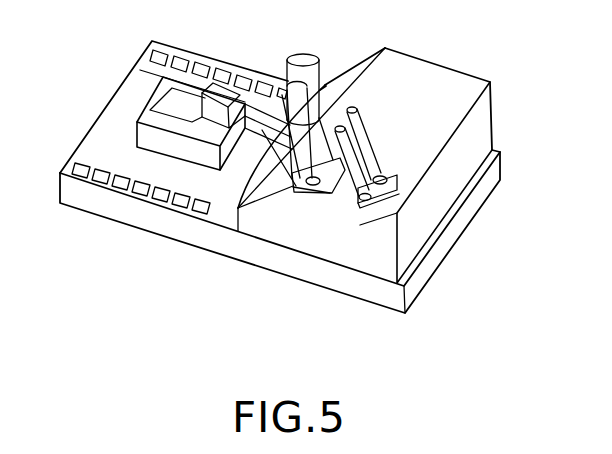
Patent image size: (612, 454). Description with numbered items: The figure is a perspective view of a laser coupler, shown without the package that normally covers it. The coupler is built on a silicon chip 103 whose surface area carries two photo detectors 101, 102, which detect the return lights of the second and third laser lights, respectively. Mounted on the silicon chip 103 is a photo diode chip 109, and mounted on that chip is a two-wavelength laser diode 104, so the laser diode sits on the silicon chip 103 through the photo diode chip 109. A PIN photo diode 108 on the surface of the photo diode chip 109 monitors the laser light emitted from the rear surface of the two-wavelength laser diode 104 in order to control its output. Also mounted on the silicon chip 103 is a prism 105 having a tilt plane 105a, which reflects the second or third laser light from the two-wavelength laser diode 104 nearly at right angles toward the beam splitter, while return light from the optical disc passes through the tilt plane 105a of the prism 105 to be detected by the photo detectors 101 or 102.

The photo detector 101 is at (322, 185).
The photo detector 102 is at (370, 212).
The silicon chip 103 is at (310, 275).
The two-wavelength laser diode 104 is at (221, 92).
The prism 105 is at (458, 83).
The tilt plane 105a is at (348, 72).
The PIN photo diode 108 is at (152, 75).
The photo diode chip 109 is at (150, 110).